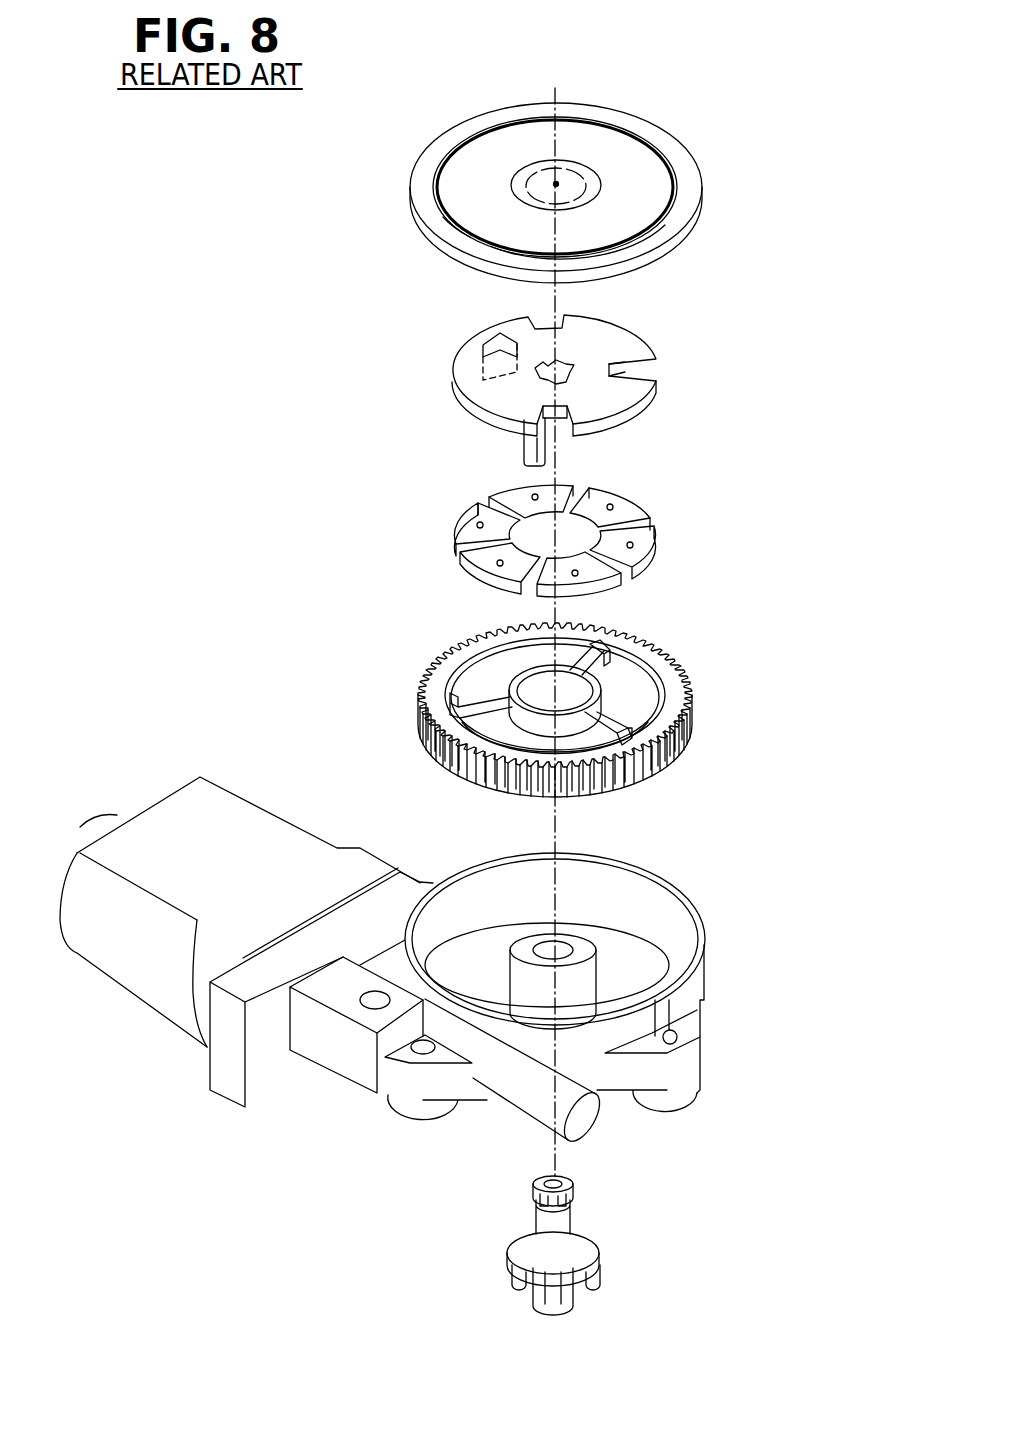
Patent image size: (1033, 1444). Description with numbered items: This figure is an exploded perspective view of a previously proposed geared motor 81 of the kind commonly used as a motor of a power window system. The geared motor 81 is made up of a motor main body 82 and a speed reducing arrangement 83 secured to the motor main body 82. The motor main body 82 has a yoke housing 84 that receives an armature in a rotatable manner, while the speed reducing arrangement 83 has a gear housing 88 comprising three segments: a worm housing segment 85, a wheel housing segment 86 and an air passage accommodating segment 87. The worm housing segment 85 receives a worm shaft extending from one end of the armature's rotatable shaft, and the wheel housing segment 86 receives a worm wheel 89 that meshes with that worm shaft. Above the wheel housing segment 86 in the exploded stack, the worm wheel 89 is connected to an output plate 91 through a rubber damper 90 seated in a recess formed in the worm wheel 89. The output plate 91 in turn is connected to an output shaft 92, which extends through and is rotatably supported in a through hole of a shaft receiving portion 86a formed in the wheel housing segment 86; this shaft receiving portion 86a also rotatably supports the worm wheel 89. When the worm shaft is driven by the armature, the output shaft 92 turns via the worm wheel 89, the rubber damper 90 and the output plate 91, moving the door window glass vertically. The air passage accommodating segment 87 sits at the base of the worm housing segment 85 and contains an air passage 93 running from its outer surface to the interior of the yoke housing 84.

The geared motor 81 is at (348, 907).
The motor main body 82 is at (302, 812).
The speed reducing arrangement 83 is at (445, 862).
The yoke housing 84 is at (115, 968).
The worm housing segment 85 is at (525, 1105).
The wheel housing segment 86 is at (700, 987).
The shaft receiving portion 86a is at (590, 988).
The air passage accommodating segment 87 is at (337, 1065).
The gear housing 88 is at (742, 927).
The worm wheel 89 is at (727, 692).
The rubber damper 90 is at (692, 540).
The output plate 91 is at (695, 393).
The output shaft 92 is at (632, 1237).
The air passage 93 is at (384, 1000).